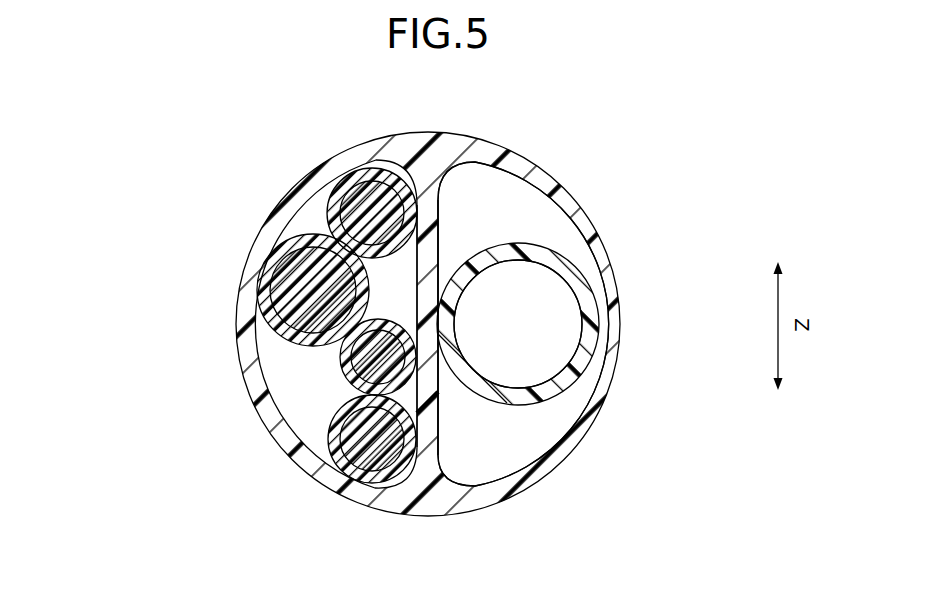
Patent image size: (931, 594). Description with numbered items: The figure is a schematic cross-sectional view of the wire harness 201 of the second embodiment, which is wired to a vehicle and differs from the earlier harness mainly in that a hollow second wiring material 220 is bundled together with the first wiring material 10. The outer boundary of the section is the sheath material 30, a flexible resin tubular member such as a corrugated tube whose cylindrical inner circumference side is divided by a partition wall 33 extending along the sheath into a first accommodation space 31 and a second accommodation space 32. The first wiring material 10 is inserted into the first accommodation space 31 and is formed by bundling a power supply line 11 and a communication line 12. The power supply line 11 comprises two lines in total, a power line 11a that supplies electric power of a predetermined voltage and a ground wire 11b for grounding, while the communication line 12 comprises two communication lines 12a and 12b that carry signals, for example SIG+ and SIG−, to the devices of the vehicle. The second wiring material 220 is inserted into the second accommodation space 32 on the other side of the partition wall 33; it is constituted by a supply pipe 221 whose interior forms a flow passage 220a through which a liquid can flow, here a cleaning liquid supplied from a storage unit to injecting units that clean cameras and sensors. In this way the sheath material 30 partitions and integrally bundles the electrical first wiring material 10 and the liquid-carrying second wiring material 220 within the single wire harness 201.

The wire harness 201 is at (250, 149).
The sheath material 30 is at (500, 132).
The first accommodation space 31 is at (424, 300).
The second accommodation space 32 is at (527, 428).
The partition wall 33 is at (425, 373).
The second wiring material 220 is at (568, 276).
The supply pipe 221 is at (540, 240).
The flow passage 220a is at (548, 303).
The first wiring material 10 is at (112, 258).
The power supply line 11 is at (156, 197).
The power line 11a is at (268, 335).
The ground wire 11b is at (318, 219).
The communication line 12 is at (156, 345).
The communication line 12a is at (329, 357).
The communication line 12b is at (322, 416).